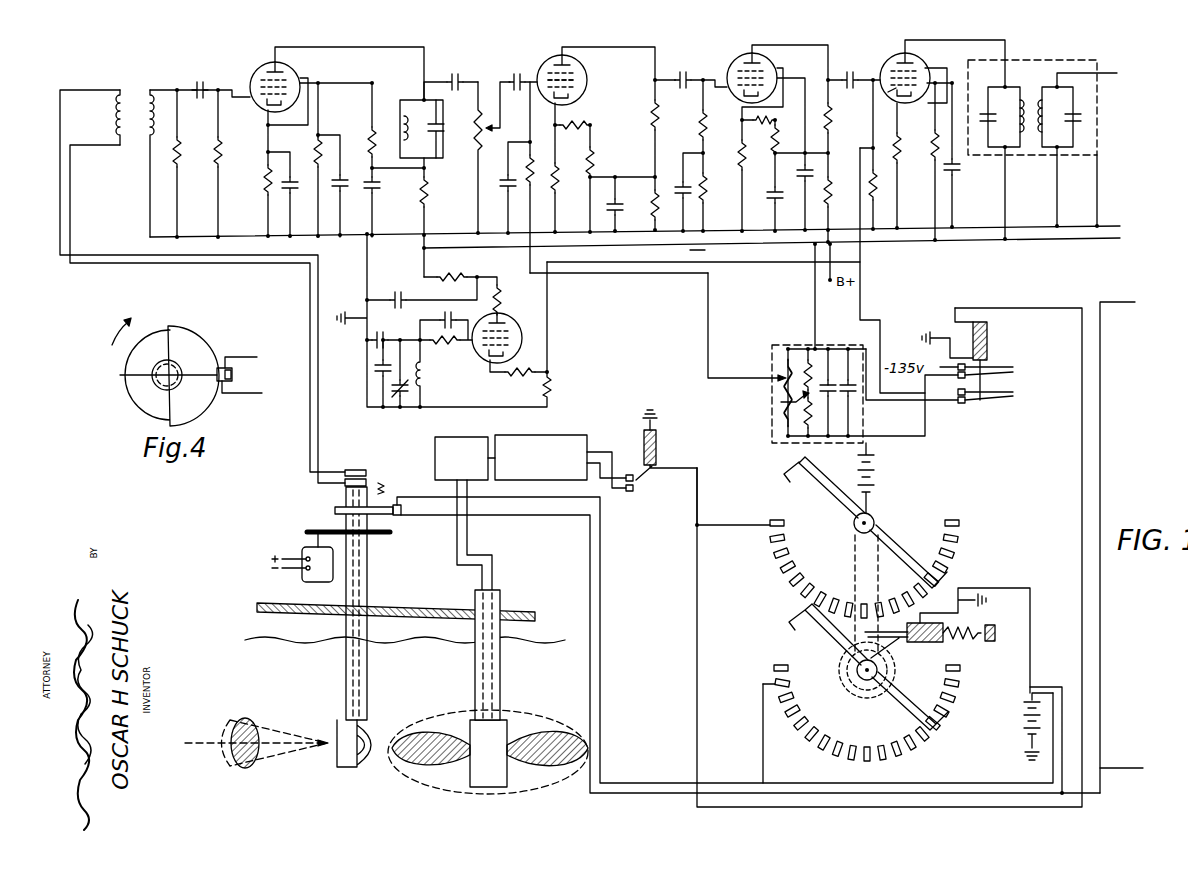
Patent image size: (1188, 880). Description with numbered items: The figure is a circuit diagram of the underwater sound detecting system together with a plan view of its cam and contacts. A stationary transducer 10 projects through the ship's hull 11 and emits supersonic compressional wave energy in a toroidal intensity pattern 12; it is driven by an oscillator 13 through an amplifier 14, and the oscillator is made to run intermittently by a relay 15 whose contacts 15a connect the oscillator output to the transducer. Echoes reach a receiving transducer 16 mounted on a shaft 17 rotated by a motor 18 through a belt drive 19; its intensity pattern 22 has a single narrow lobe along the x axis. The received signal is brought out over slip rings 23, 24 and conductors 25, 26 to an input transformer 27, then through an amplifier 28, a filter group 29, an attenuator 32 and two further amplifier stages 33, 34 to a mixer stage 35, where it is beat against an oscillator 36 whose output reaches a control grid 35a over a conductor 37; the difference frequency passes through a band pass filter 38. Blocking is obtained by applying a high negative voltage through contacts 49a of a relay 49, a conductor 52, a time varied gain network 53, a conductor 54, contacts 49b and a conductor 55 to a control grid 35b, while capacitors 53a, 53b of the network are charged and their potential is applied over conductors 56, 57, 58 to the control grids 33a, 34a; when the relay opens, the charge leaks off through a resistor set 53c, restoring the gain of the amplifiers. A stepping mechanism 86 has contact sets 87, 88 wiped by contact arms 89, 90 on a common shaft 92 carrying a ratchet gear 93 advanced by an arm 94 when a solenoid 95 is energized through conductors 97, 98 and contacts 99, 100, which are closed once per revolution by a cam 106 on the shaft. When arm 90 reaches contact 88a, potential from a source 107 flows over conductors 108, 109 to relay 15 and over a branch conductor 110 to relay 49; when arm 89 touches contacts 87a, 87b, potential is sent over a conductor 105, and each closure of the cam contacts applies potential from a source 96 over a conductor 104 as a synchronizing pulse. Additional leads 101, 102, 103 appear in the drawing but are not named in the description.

In FIG. 1, the transducer 10 is at (477, 727).
In FIG. 1, the ship's hull 11 is at (430, 607).
In FIG. 1, the intensity pattern 12 is at (557, 730).
In FIG. 1, the oscillator 13 is at (553, 437).
In FIG. 1, the amplifier 14 is at (433, 447).
In FIG. 1, the relay 15 is at (663, 423).
In FIG. 1, the contacts 15a is at (633, 484).
In FIG. 1, the receiving transducer 16 is at (357, 768).
In FIG. 1, the shaft 17 is at (345, 668).
In FIG. 4, the shaft 17 is at (152, 374).
In FIG. 1, the motor 18 is at (303, 545).
In FIG. 1, the belt drive 19 is at (373, 538).
In FIG. 1, the intensity pattern 22 is at (240, 720).
In FIG. 1, the slip ring 23 is at (360, 470).
In FIG. 1, the slip ring 24 is at (367, 480).
In FIG. 1, the conductor 25 is at (310, 315).
In FIG. 1, the conductor 26 is at (318, 285).
In FIG. 1, the input transformer 27 is at (130, 93).
In FIG. 1, the amplifier 28 is at (254, 70).
In FIG. 1, the filter group 29 is at (418, 100).
In FIG. 1, the attenuator 32 is at (480, 148).
In FIG. 1, the amplifier stage 33 is at (548, 57).
In FIG. 1, the control grid 33a is at (577, 90).
In FIG. 1, the amplifier stage 34 is at (738, 57).
In FIG. 1, the control grid 34a is at (738, 88).
In FIG. 1, the mixer stage 35 is at (897, 55).
In FIG. 1, the control grid 35a is at (887, 92).
In FIG. 1, the control grid 35b is at (885, 75).
In FIG. 1, the oscillator 36 is at (510, 316).
In FIG. 1, the conductor 37 is at (763, 262).
In FIG. 1, the band pass filter 38 is at (1040, 60).
In FIG. 1, the relay 49 is at (990, 338).
In FIG. 1, the contacts 49a is at (1000, 371).
In FIG. 1, the contacts 49b is at (1001, 396).
In FIG. 1, the conductor 52 is at (928, 422).
In FIG. 1, the time varied gain network 53 is at (770, 356).
In FIG. 1, the capacitor 53a is at (823, 383).
In FIG. 1, the capacitor 53b is at (847, 383).
In FIG. 1, the resistor set 53c is at (781, 402).
In FIG. 1, the conductor 54 is at (897, 403).
In FIG. 1, the conductor 55 is at (864, 293).
In FIG. 1, the conductor 56 is at (707, 302).
In FIG. 1, the conductor 57 is at (643, 274).
In FIG. 1, the conductor 58 is at (682, 254).
In FIG. 1, the stepping mechanism 86 is at (770, 617).
In FIG. 1, the contact set 87 is at (958, 695).
In FIG. 1, the contact 87a is at (772, 668).
In FIG. 1, the contact 87b is at (767, 678).
In FIG. 1, the contact set 88 is at (958, 548).
In FIG. 1, the contact 88a is at (770, 523).
In FIG. 1, the contact arm 89 is at (818, 633).
In FIG. 1, the contact arm 90 is at (823, 492).
In FIG. 1, the shaft 92 is at (875, 518).
In FIG. 1, the ratchet gear 93 is at (863, 697).
In FIG. 1, the arm 94 is at (884, 637).
In FIG. 1, the solenoid 95 is at (945, 641).
In FIG. 1, the source 96 is at (1020, 723).
In FIG. 1, the conductor 97 is at (601, 600).
In FIG. 4, the conductor 97 is at (255, 358).
In FIG. 1, the conductor 98 is at (592, 628).
In FIG. 4, the conductor 98 is at (248, 393).
In FIG. 1, the contact 99 is at (389, 497).
In FIG. 4, the contact 99 is at (222, 353).
In FIG. 1, the contact 100 is at (399, 516).
In FIG. 4, the contact 100 is at (228, 382).
In FIG. 1, the output lead 101 is at (1104, 78).
In FIG. 1, the lead 102 is at (652, 223).
In FIG. 1, the lead 103 is at (789, 237).
In FIG. 1, the conductor 104 is at (1133, 543).
In FIG. 1, the conductor 105 is at (763, 701).
In FIG. 1, the cam 106 is at (335, 508).
In FIG. 4, the cam 106 is at (138, 403).
In FIG. 1, the source 107 is at (880, 474).
In FIG. 1, the conductor 108 is at (740, 527).
In FIG. 1, the conductor 109 is at (698, 468).
In FIG. 1, the branch conductor 110 is at (696, 640).